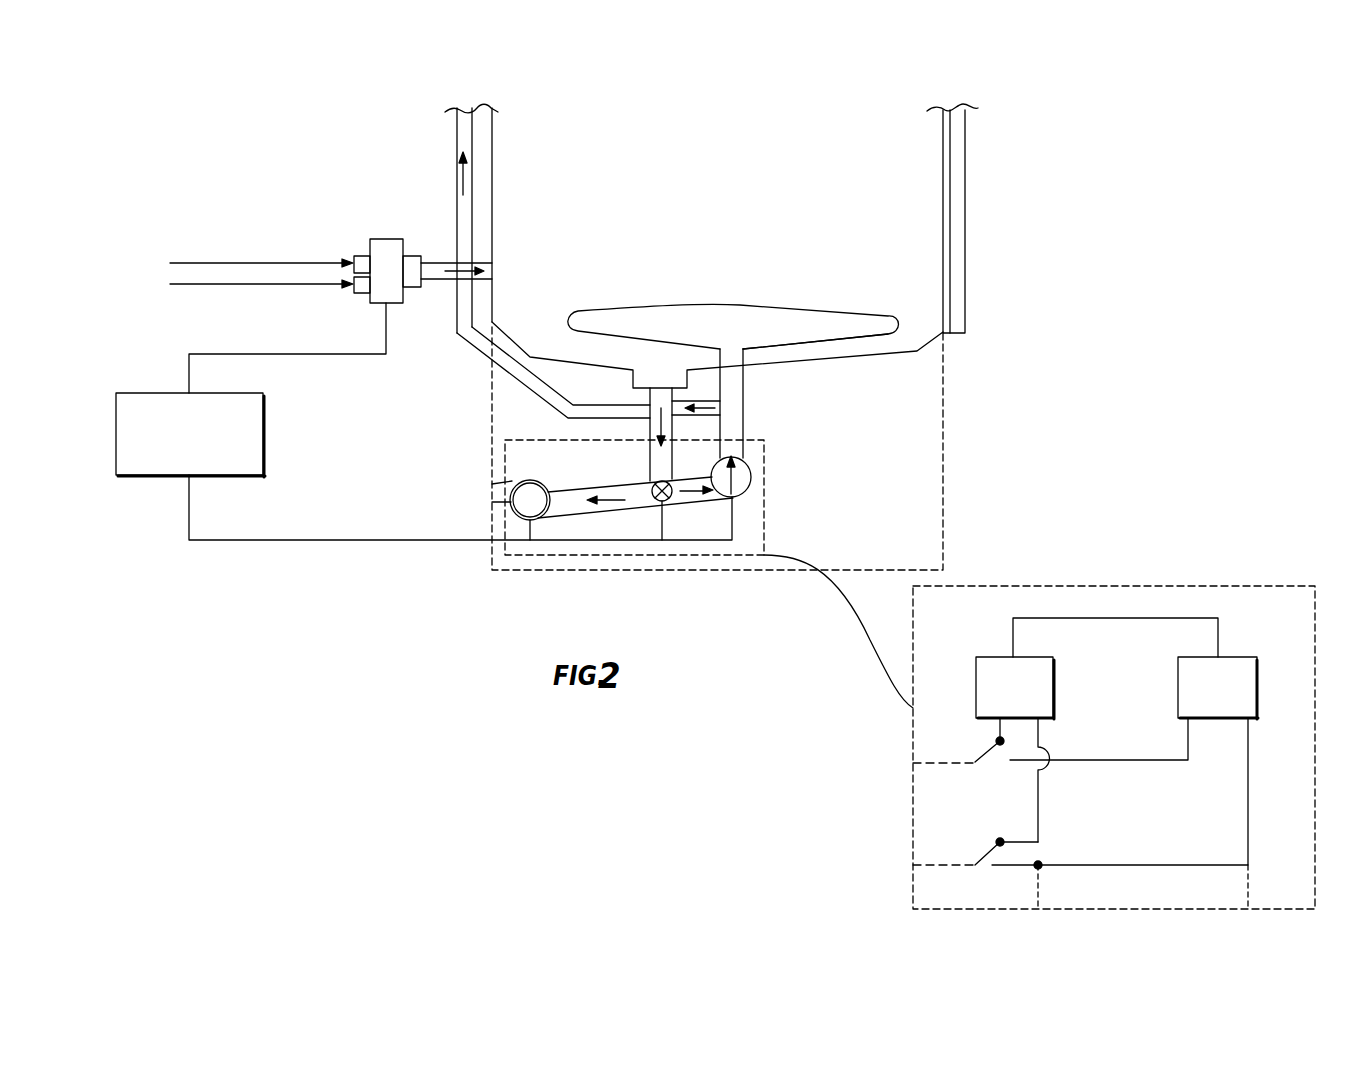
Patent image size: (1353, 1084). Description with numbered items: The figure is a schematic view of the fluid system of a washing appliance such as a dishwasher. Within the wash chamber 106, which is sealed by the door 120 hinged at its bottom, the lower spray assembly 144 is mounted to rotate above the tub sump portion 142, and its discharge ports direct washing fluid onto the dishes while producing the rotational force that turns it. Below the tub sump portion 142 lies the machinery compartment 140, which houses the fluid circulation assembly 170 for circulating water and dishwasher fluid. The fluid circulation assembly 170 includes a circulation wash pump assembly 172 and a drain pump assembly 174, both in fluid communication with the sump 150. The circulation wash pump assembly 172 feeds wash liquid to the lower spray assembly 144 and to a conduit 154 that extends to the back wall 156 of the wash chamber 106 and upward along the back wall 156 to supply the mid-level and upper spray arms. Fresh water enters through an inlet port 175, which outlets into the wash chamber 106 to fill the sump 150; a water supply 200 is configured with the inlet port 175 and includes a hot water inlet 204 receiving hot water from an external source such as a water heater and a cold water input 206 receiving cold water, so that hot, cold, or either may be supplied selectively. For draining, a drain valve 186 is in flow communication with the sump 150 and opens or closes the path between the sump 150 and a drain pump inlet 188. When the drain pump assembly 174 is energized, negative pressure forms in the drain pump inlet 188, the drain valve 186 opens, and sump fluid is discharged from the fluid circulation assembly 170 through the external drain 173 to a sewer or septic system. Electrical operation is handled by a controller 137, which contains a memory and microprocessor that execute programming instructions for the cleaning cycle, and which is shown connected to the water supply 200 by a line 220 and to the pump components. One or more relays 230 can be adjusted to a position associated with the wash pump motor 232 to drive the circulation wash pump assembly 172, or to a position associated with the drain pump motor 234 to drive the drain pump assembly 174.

The wash chamber 106 is at (801, 140).
The door 120 is at (968, 197).
The controller 137 is at (176, 407).
The machinery compartment 140 is at (947, 465).
The tub sump portion 142 is at (830, 363).
The lower spray assembly 144 is at (777, 316).
The sump 150 is at (662, 374).
The conduit 154 is at (487, 360).
The back wall 156 is at (493, 132).
The fluid circulation assembly 170 is at (800, 484).
The circulation wash pump assembly 172 is at (745, 484).
The external drain 173 is at (487, 495).
The drain pump assembly 174 is at (530, 500).
The inlet port 175 is at (493, 268).
The drain valve 186 is at (665, 505).
The drain pump inlet 188 is at (607, 513).
The water supply 200 is at (341, 234).
The hot water inlet 204 is at (197, 262).
The cold water input 206 is at (197, 286).
The control line 220 is at (272, 355).
The relay 230 is at (972, 751).
The wash pump motor 232 is at (1097, 730).
The drain pump motor 234 is at (1125, 783).